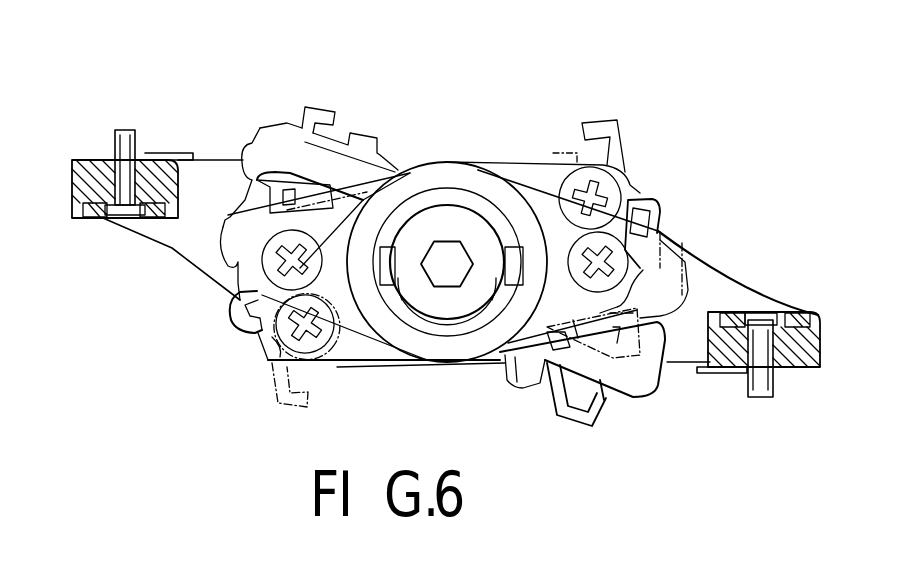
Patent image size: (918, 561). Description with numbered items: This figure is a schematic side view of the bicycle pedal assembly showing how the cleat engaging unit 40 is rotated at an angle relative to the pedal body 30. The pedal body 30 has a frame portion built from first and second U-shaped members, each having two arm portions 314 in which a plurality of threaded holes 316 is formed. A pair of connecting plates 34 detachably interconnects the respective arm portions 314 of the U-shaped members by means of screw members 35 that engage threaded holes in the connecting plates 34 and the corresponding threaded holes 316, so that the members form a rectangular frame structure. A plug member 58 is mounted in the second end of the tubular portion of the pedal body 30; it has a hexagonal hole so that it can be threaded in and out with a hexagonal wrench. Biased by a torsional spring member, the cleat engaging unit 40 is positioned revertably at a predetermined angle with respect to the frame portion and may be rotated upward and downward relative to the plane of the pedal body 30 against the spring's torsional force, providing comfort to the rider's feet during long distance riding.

The pedal body 30 is at (708, 264).
The connecting plate 34 is at (94, 214).
The screw member 35 is at (125, 133).
The cleat engaging unit 40 is at (318, 104).
The plug member 58 is at (452, 217).
The arm portion 314 is at (88, 180).
The threaded hole 316 is at (115, 183).